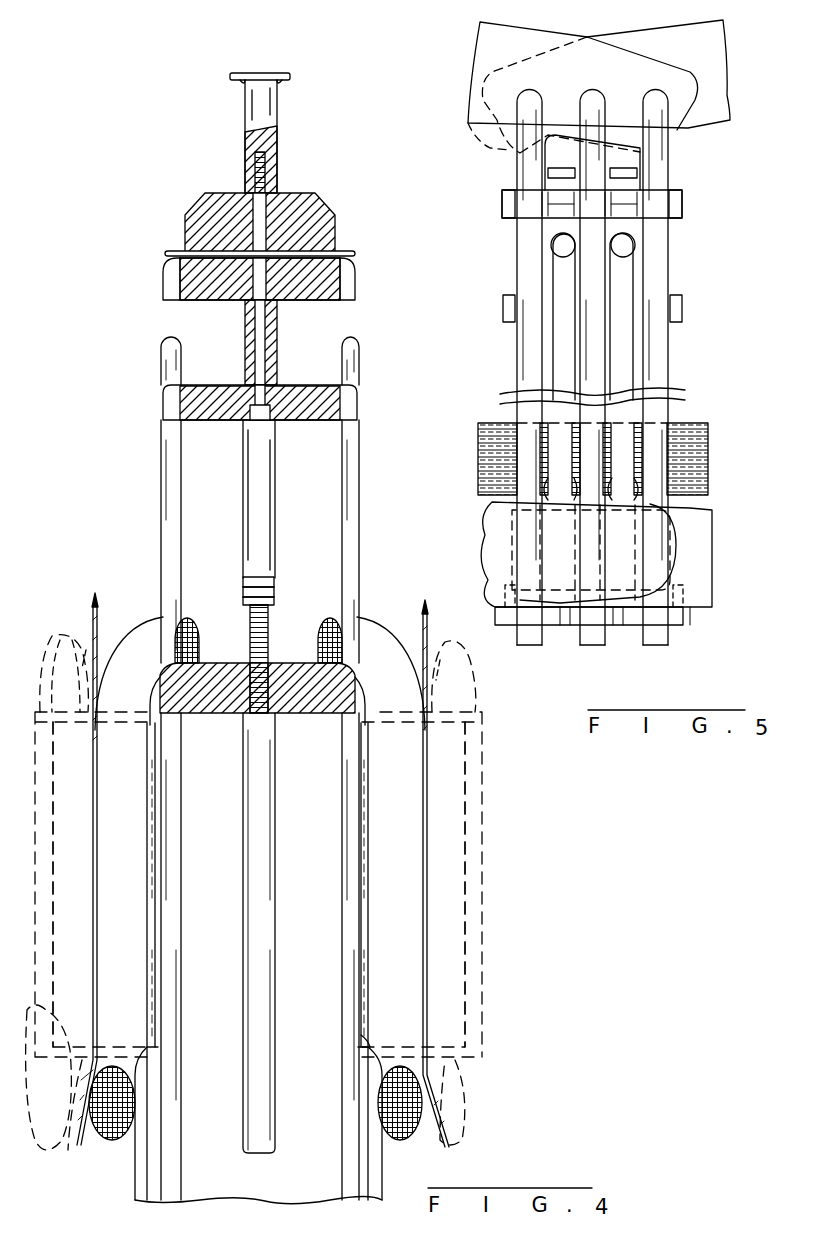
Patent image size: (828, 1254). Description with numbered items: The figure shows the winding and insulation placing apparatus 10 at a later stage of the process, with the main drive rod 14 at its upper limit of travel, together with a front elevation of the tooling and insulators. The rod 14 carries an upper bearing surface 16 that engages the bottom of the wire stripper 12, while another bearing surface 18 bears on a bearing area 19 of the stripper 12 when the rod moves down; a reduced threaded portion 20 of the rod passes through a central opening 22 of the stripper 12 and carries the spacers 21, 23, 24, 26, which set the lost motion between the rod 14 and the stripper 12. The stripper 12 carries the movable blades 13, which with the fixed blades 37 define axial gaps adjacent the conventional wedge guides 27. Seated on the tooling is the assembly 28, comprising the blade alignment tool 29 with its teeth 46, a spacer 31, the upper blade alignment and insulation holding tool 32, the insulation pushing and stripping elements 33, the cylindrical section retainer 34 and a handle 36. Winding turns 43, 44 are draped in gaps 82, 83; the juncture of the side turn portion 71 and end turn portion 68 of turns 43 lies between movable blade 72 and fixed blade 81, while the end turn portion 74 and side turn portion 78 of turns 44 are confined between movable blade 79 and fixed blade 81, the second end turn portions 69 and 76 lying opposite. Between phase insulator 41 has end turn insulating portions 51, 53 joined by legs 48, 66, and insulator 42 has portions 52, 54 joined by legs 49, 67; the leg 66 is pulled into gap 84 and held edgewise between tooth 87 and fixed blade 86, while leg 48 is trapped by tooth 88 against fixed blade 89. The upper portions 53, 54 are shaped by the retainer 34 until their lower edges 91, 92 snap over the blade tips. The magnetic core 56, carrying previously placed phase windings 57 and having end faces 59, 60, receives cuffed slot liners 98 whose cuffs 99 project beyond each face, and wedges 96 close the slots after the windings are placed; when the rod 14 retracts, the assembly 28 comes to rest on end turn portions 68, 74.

In FIG. 4, the winding and insulation placing apparatus 10 is at (113, 362).
In FIG. 4, the wire stripper 12 is at (229, 696).
In FIG. 5, the wire stripper 12 is at (678, 625).
In FIG. 4, the movable blades 13 is at (163, 485).
In FIG. 5, the movable blades 13 is at (565, 265).
In FIG. 4, the main drive rod 14 is at (275, 797).
In FIG. 4, the upper bearing surface 16 is at (285, 713).
In FIG. 4, the upper bearing surface 18 is at (268, 605).
In FIG. 4, the bearing area 19 is at (272, 668).
In FIG. 4, the threaded portion 20 is at (250, 636).
In FIG. 5, the threaded portion 20 is at (592, 459).
In FIG. 4, the spacer 21 is at (274, 598).
In FIG. 4, the central opening 22 is at (281, 690).
In FIG. 4, the spacer 23 is at (243, 592).
In FIG. 4, the spacer 24 is at (274, 588).
In FIG. 4, the spacer 26 is at (275, 510).
In FIG. 4, the wedge guides 27 is at (135, 1185).
In FIG. 4, the assembly 28 is at (150, 252).
In FIG. 4, the blade alignment tool 29 is at (315, 414).
In FIG. 5, the blade alignment tool 29 is at (503, 308).
In FIG. 4, the spacer 31 is at (277, 332).
In FIG. 4, the upper blade alignment and insulation holding tool 32 is at (313, 287).
In FIG. 5, the upper blade alignment and insulation holding tool 32 is at (502, 204).
In FIG. 4, the insulation pushing and stripping elements 33 is at (175, 252).
In FIG. 5, the insulation pushing and stripping elements 33 is at (562, 172).
In FIG. 4, the cylindrical section retainer 34 is at (313, 234).
In FIG. 4, the handle 36 is at (245, 100).
In FIG. 4, the fixed blades 37 is at (160, 690).
In FIG. 5, the fixed blades 37 is at (530, 646).
In FIG. 4, the between phase insulator 41 is at (425, 600).
In FIG. 5, the between phase insulator 41 is at (738, 57).
In FIG. 4, the between phase insulator 42 is at (95, 593).
In FIG. 5, the between phase insulator 42 is at (468, 62).
In FIG. 4, the winding turns 43 is at (402, 675).
In FIG. 5, the winding turns 43 is at (708, 438).
In FIG. 4, the winding turns 44 is at (112, 672).
In FIG. 5, the winding turns 44 is at (478, 438).
In FIG. 5, the teeth 46 is at (553, 300).
In FIG. 4, the leg 48 is at (430, 806).
In FIG. 4, the leg 49 is at (90, 830).
In FIG. 5, the end turn insulating portion 51 is at (708, 581).
In FIG. 5, the end turn insulating portion 52 is at (505, 548).
In FIG. 5, the end turn insulating portion 53 is at (707, 47).
In FIG. 5, the end turn insulating portion 54 is at (512, 51).
In FIG. 4, the magnetic core 56 is at (49, 1086).
In FIG. 4, the phase windings 57 is at (52, 610).
In FIG. 4, the end face 59 is at (55, 625).
In FIG. 4, the end face 60 is at (380, 1050).
In FIG. 5, the leg 66 is at (635, 505).
In FIG. 5, the leg 67 is at (557, 505).
In FIG. 4, the first end turn portion 68 is at (330, 618).
In FIG. 5, the first end turn portion 68 is at (700, 445).
In FIG. 4, the second end turn portion 69 is at (413, 1112).
In FIG. 5, the second side turn portion 71 is at (608, 510).
In FIG. 5, the movable blade 72 is at (640, 345).
In FIG. 4, the first end turn portion 74 is at (187, 618).
In FIG. 5, the first end turn portion 74 is at (512, 477).
In FIG. 4, the second end turn portion 76 is at (125, 1112).
In FIG. 5, the side turn portion 78 is at (573, 510).
In FIG. 5, the movable blade 79 is at (560, 346).
In FIG. 5, the fixed blade 81 is at (592, 100).
In FIG. 5, the gap 82 is at (686, 390).
In FIG. 5, the gap 83 is at (502, 394).
In FIG. 5, the gap 84 is at (640, 150).
In FIG. 5, the fixed blade 86 is at (655, 100).
In FIG. 4, the tooth 87 is at (168, 406).
In FIG. 5, the tooth 87 is at (682, 312).
In FIG. 4, the tooth 88 is at (355, 282).
In FIG. 5, the tooth 88 is at (682, 200).
In FIG. 4, the fixed blade 89 is at (345, 730).
In FIG. 5, the lower edge 91 is at (700, 132).
In FIG. 5, the lower edge 92 is at (478, 140).
In FIG. 4, the wedges 96 is at (147, 832).
In FIG. 4, the slot liners 98 is at (60, 648).
In FIG. 4, the cuffs 99 is at (55, 724).